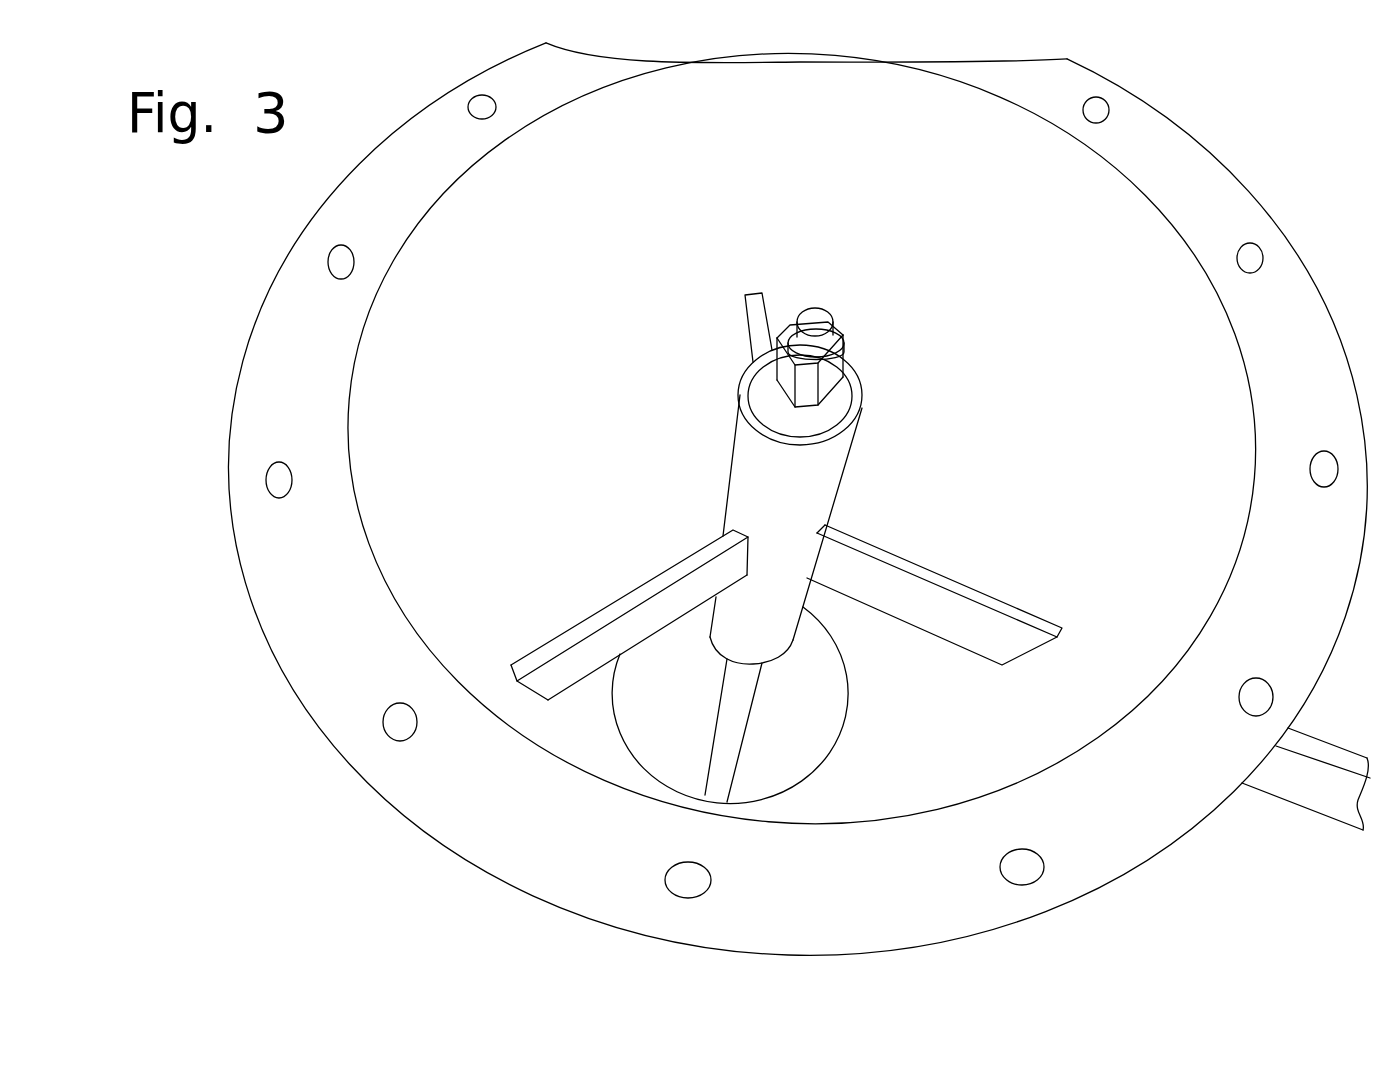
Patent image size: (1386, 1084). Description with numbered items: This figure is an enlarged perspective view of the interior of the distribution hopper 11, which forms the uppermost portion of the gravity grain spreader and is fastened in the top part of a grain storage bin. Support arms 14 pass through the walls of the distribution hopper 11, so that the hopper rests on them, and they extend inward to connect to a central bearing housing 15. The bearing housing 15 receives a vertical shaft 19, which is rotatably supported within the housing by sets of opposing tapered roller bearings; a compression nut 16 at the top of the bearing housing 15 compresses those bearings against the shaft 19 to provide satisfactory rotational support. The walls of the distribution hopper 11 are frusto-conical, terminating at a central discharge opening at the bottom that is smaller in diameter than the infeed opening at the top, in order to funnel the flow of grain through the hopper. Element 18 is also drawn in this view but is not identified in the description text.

The distribution hopper 11 is at (280, 795).
The support arms 14 is at (558, 653).
The bearing housing 15 is at (716, 636).
The compression nut 16 is at (777, 380).
The flange plate 18 is at (1005, 917).
The vertical shaft 19 is at (730, 735).